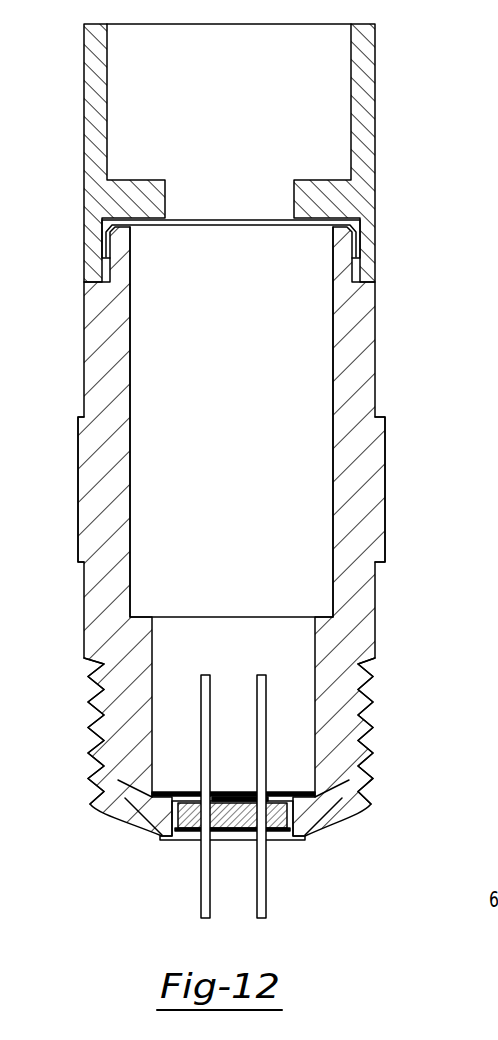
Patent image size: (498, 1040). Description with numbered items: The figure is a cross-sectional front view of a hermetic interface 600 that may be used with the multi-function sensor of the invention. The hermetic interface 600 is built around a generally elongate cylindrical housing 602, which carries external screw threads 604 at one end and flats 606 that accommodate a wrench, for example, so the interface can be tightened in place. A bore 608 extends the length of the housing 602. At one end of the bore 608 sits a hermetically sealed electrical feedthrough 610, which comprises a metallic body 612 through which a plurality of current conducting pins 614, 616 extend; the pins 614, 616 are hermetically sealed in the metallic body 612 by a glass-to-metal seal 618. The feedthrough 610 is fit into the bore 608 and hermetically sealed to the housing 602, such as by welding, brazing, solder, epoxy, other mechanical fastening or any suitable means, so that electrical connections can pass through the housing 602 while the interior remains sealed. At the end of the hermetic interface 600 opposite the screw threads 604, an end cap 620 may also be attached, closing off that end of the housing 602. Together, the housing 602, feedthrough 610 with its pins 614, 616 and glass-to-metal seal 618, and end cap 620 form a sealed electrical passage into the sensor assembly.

The hermetic interface 600 is at (261, 485).
The housing 602 is at (376, 338).
The external screw threads 604 is at (372, 718).
The flats 606 is at (385, 455).
The bore 608 is at (333, 408).
The hermetically sealed electrical feedthrough 610 is at (221, 857).
The metallic body 612 is at (165, 838).
The current conducting pin 614 is at (200, 895).
The current conducting pin 616 is at (268, 895).
The glass-to-metal seal 618 is at (283, 822).
The end cap 620 is at (375, 127).